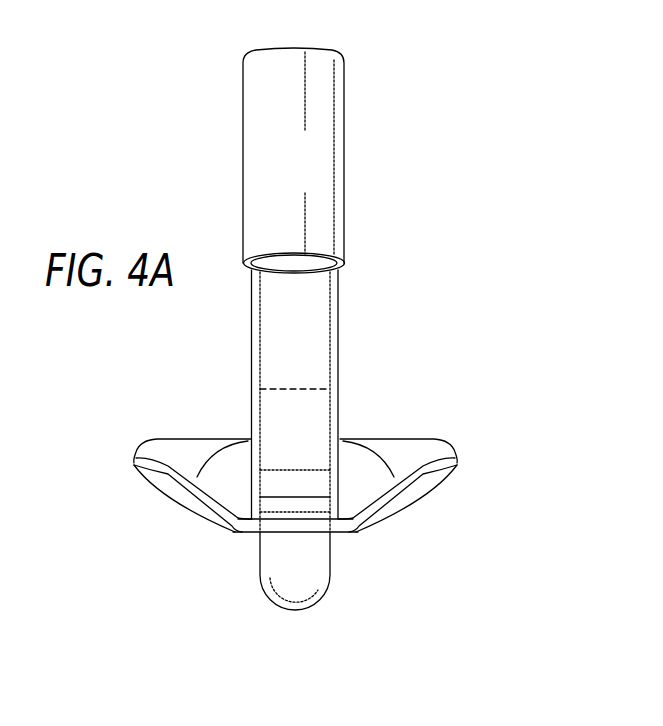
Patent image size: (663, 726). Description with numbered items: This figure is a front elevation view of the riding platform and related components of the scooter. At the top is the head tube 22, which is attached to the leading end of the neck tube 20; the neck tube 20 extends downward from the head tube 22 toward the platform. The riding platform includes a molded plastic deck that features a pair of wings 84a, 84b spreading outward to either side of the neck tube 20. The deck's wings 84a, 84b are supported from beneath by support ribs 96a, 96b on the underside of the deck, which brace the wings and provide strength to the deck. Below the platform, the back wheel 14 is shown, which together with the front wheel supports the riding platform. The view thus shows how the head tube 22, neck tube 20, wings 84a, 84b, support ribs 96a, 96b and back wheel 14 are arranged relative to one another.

The head tube 22 is at (258, 162).
The neck tube 20 is at (317, 357).
The back wheel 14 is at (283, 582).
The wing 84a is at (208, 438).
The wing 84b is at (403, 438).
The support rib 96a is at (413, 497).
The support rib 96b is at (172, 493).